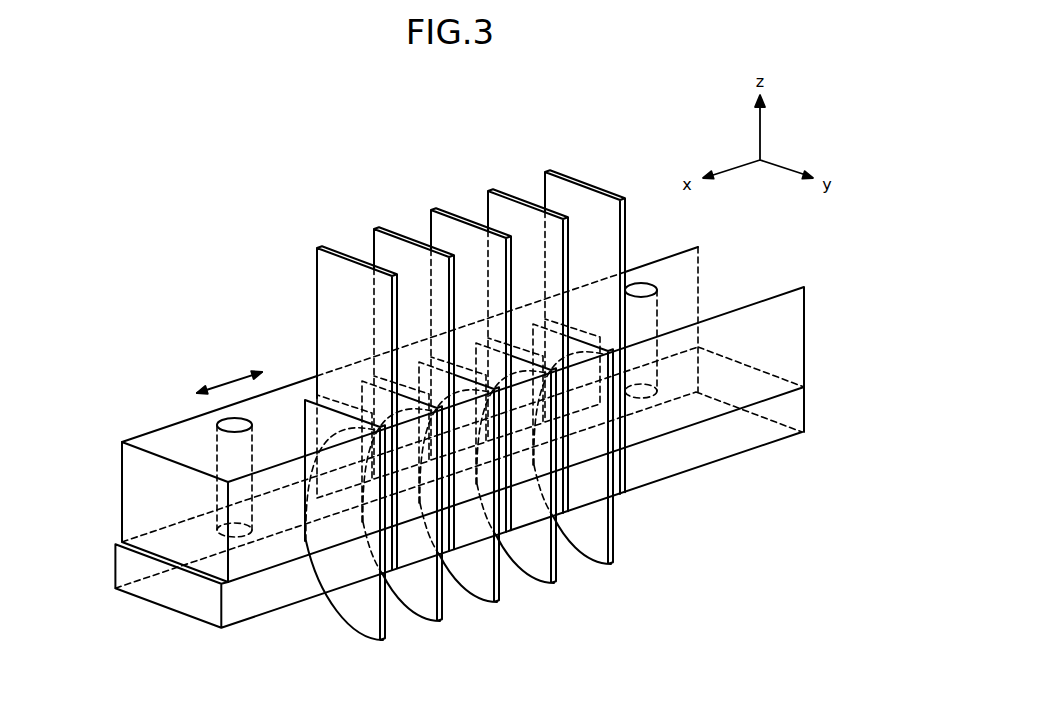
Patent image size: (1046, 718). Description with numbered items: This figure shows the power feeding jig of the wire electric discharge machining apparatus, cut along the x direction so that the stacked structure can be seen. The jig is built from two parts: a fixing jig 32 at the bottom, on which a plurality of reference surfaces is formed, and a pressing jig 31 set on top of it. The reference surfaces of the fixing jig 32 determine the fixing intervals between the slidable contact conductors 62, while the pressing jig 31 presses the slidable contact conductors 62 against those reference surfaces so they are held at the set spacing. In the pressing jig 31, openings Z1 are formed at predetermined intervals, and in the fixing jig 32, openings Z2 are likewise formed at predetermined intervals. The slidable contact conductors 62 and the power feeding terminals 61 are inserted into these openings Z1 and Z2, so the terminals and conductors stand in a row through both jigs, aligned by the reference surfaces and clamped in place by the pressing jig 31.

The pressing jig 31 is at (118, 490).
The fixing jig 32 is at (114, 566).
The power feeding terminal 61 is at (315, 299).
The slidable contact conductor 62 is at (340, 610).
The opening Z1 is at (404, 468).
The opening Z2 is at (386, 563).